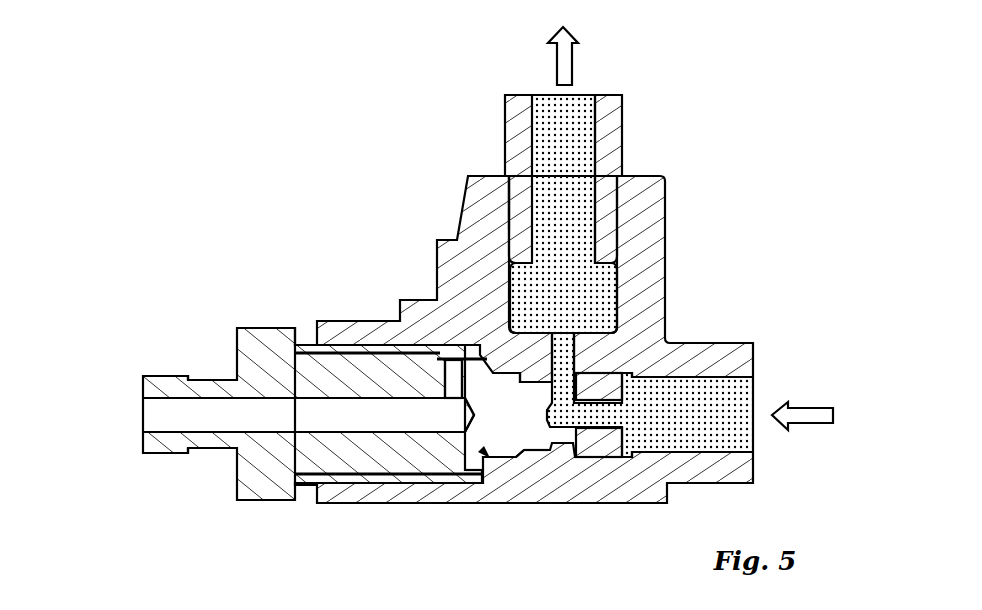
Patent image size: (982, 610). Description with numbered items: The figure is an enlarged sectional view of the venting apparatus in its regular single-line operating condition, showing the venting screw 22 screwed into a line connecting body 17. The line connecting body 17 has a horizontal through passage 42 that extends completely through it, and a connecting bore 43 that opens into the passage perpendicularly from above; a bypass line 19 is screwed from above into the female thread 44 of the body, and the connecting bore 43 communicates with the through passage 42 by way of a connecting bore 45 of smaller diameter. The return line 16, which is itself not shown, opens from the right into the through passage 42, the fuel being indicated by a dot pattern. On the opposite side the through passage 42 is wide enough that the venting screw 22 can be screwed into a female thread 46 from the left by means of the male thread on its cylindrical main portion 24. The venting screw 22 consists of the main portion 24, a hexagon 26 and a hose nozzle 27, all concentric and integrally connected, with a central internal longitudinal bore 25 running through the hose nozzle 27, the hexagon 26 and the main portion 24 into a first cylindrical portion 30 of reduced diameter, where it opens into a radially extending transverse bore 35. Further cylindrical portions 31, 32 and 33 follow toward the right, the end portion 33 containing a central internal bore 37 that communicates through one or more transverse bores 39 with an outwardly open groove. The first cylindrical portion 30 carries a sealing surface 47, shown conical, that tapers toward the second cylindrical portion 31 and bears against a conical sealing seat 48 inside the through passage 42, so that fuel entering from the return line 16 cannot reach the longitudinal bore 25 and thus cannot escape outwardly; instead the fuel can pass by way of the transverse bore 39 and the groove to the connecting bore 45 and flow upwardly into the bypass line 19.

The return line 16 is at (820, 426).
The line connecting body 17 is at (684, 241).
The bypass line 19 is at (618, 140).
The venting screw 22 is at (216, 310).
The cylindrical main portion 24 is at (388, 459).
The internal longitudinal bore 25 is at (304, 415).
The hexagon 26 is at (262, 333).
The hose nozzle 27 is at (163, 380).
The first cylindrical portion 30 is at (456, 453).
The second cylindrical portion 31 is at (510, 450).
The third cylindrical portion 32 is at (535, 442).
The cylindrical portion forming the end of the venting screw 33 is at (593, 385).
The transverse bore 35 is at (450, 370).
The central internal bore 37 is at (590, 420).
The transverse bore 39 is at (560, 398).
The through passage 42 is at (687, 415).
The connecting bore 43 is at (563, 214).
The female thread 44 is at (503, 212).
The connecting bore 45 is at (574, 353).
The female thread 46 is at (353, 483).
The sealing surface 47 is at (487, 455).
The conical sealing seat 48 is at (490, 458).